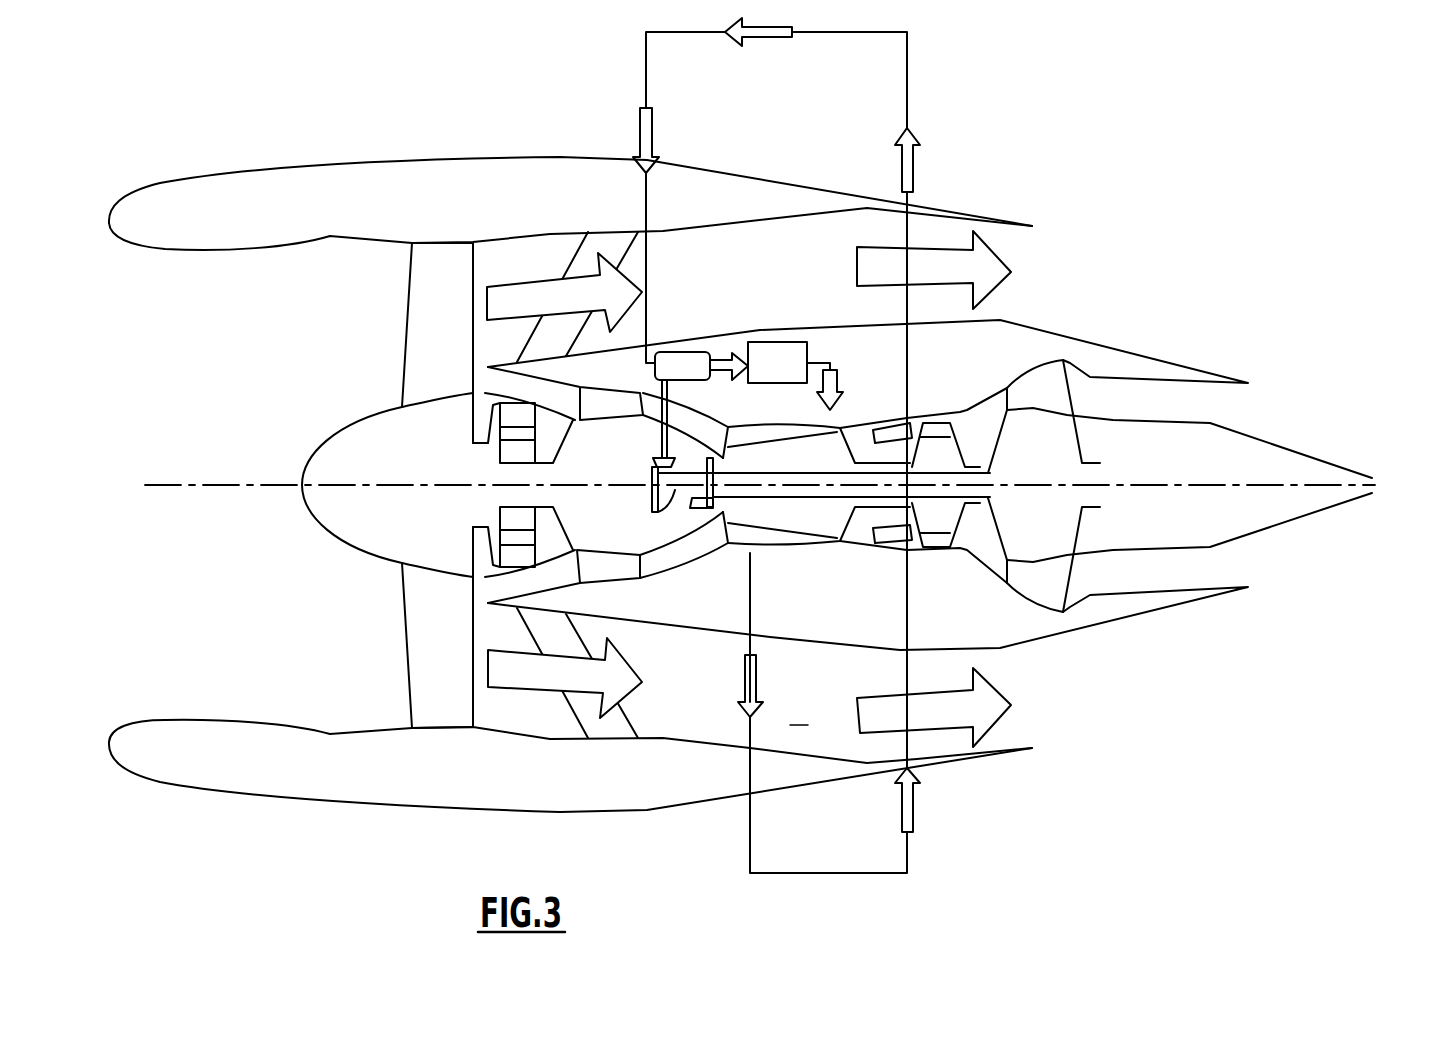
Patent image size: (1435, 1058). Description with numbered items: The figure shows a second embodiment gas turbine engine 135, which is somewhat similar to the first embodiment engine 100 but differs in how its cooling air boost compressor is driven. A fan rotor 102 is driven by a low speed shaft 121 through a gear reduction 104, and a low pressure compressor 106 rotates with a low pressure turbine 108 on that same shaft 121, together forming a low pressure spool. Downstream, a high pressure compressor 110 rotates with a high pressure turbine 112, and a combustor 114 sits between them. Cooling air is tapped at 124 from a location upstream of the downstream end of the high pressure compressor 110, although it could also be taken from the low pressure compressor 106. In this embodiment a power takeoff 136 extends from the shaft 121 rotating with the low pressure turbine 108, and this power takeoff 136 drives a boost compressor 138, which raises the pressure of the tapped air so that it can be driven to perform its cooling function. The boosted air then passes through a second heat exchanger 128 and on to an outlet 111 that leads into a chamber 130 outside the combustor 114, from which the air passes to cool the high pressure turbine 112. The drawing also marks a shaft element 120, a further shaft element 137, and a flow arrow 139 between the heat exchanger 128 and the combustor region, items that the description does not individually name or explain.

The engine 100 is at (538, 130).
The fan rotor 102 is at (415, 362).
The gear reduction 104 is at (522, 537).
The low pressure compressor 106 is at (610, 405).
The low pressure turbine 108 is at (1030, 388).
The high pressure compressor 110 is at (755, 438).
The outlet 111 is at (843, 537).
The high pressure turbine 112 is at (937, 427).
The combustor 114 is at (892, 430).
The high pressure shaft 120 is at (700, 508).
The low speed shaft 121 is at (652, 512).
The cooling air tap 124 is at (770, 548).
The second heat exchanger 128 is at (772, 342).
The chamber 130 is at (908, 543).
The engine 135 is at (982, 126).
The power takeoff 136 is at (650, 463).
The shaft 137 is at (965, 480).
The boost compressor 138 is at (683, 363).
The flow arrow 139 is at (828, 409).